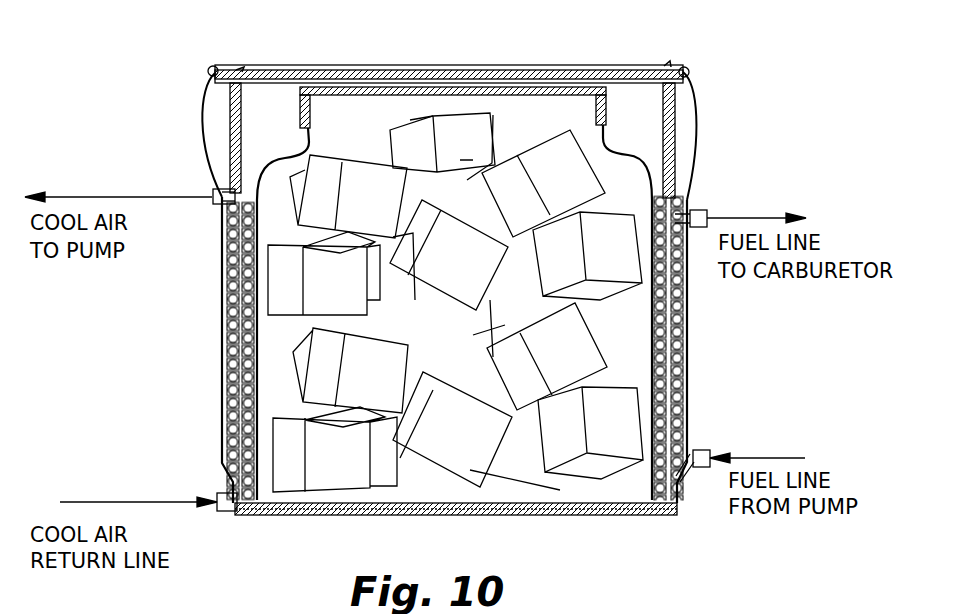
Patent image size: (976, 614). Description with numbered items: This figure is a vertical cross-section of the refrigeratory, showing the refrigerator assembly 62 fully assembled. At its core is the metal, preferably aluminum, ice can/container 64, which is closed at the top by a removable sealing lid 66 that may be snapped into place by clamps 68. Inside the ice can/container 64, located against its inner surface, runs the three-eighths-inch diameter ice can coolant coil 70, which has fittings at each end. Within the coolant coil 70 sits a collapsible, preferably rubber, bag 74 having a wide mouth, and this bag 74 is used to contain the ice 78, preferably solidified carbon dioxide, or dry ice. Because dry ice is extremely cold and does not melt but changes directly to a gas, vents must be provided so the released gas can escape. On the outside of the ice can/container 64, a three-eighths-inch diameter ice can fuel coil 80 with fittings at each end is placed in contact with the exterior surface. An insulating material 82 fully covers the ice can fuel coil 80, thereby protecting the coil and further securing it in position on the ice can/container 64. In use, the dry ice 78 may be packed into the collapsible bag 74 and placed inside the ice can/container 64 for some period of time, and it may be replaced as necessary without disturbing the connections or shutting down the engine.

The refrigerator assembly 62 is at (98, 86).
The ice can/container 64 is at (243, 108).
The removable sealing lid 66 is at (633, 83).
The clamps 68 is at (207, 104).
The ice can coolant coil 70 is at (258, 465).
The collapsible bag 74 is at (650, 178).
The ice 78 is at (573, 358).
The ice can fuel coil 80 is at (222, 295).
The insulating material 82 is at (447, 70).